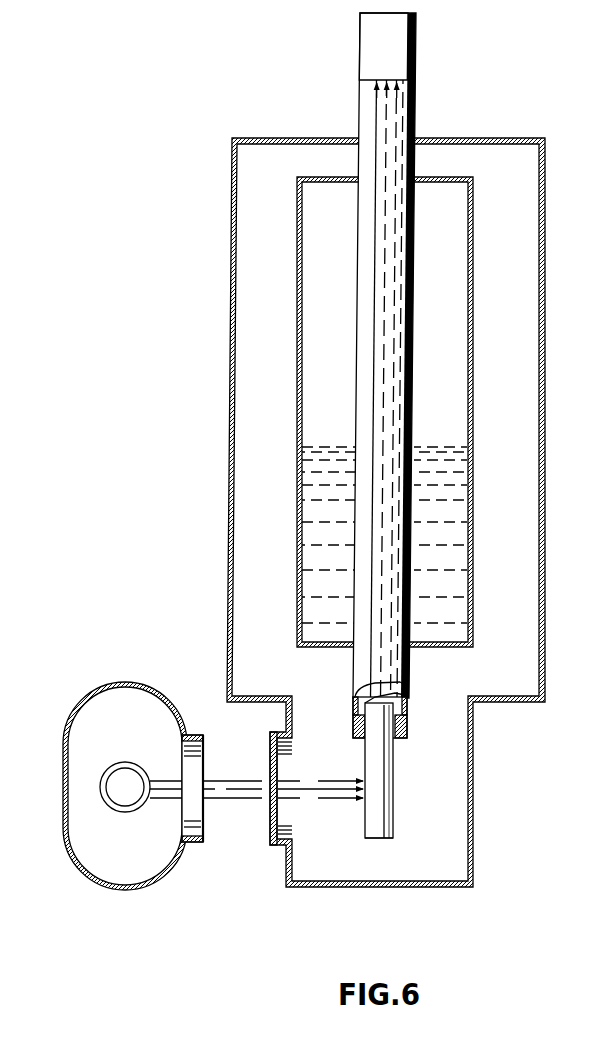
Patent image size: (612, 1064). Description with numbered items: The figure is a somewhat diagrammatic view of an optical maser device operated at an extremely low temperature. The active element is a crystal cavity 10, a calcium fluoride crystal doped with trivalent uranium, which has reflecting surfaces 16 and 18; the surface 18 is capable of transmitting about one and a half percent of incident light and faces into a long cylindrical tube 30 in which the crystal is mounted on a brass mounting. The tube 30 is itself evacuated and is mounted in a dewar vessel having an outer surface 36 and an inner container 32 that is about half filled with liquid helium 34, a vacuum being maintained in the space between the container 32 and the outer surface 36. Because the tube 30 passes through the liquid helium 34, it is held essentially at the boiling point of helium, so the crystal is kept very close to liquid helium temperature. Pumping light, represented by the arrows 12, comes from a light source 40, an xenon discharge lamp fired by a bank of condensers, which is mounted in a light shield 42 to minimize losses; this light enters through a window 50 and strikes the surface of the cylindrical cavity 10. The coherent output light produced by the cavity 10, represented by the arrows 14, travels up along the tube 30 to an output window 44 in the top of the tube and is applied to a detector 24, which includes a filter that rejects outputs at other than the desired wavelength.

The crystal cavity 10 is at (392, 797).
The pumping light input 12 is at (221, 781).
The output coherent light 14 is at (393, 297).
The reflecting surface 16 is at (370, 839).
The reflecting surface 18 is at (388, 700).
The detector 24 is at (400, 55).
The cylindrical tube 30 is at (356, 668).
The inner container 32 is at (472, 250).
The liquid helium 34 is at (440, 522).
The outer surface 36 is at (232, 415).
The light source 40 is at (104, 800).
The light shield 42 is at (96, 690).
The output window 44 is at (360, 90).
The window 50 is at (272, 832).